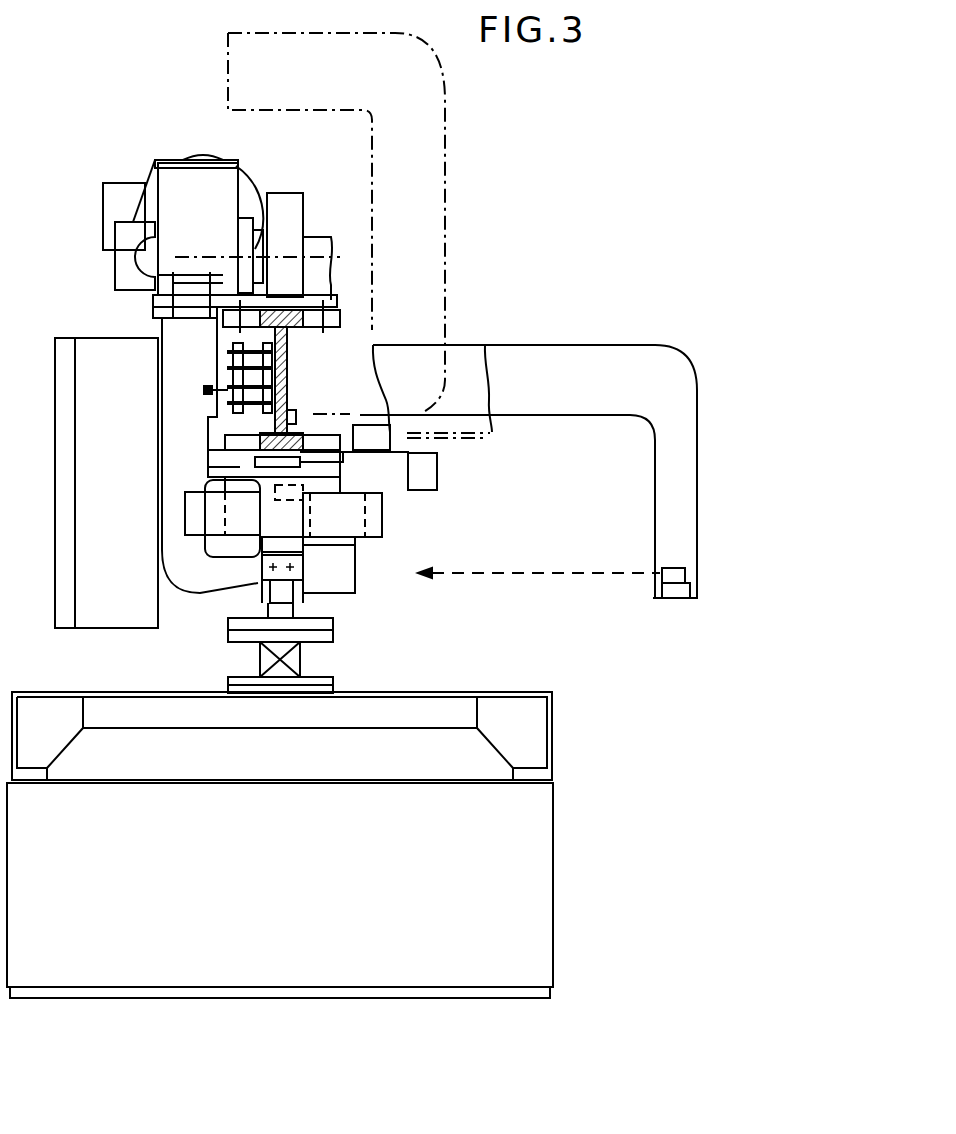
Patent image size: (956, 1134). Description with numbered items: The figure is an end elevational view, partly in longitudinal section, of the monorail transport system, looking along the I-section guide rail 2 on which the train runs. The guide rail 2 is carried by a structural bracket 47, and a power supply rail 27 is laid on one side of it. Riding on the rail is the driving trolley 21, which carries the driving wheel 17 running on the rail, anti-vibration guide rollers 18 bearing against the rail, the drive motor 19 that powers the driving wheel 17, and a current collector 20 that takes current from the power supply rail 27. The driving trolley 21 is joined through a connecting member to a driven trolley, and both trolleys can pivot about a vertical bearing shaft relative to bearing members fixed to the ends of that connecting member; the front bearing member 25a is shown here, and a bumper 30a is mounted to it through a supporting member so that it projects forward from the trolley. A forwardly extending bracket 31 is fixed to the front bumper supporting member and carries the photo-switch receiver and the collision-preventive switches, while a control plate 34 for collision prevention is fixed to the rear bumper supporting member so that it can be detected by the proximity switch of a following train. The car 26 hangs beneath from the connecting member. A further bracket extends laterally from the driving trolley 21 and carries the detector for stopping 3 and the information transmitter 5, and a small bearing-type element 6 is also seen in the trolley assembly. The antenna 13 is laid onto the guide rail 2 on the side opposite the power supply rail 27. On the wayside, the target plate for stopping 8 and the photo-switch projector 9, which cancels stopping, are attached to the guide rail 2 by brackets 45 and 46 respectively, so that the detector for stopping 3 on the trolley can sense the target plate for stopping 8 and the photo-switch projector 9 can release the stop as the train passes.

The guide rail 2 is at (292, 362).
The detector for stopping 3 is at (430, 480).
The information transmitter 5 is at (383, 413).
The bearing 6 is at (240, 460).
The target plate for stopping 8 is at (440, 435).
The photo-switch projector 9 is at (675, 572).
The antenna 13 is at (300, 414).
The driving wheel 17 is at (293, 217).
The anti-vibration guide rollers 18 is at (270, 290).
The drive motor 19 is at (245, 190).
The current collector 20 is at (204, 390).
The driving trolley 21 is at (183, 377).
The bearing member 25a is at (297, 607).
The car 26 is at (533, 855).
The power supply rail 27 is at (267, 370).
The bumper 30a is at (372, 525).
The bracket 31 is at (345, 597).
The control plate 34 is at (267, 595).
The bracket 45 is at (490, 382).
The bracket 46 is at (662, 367).
The structural bracket 47 is at (438, 120).